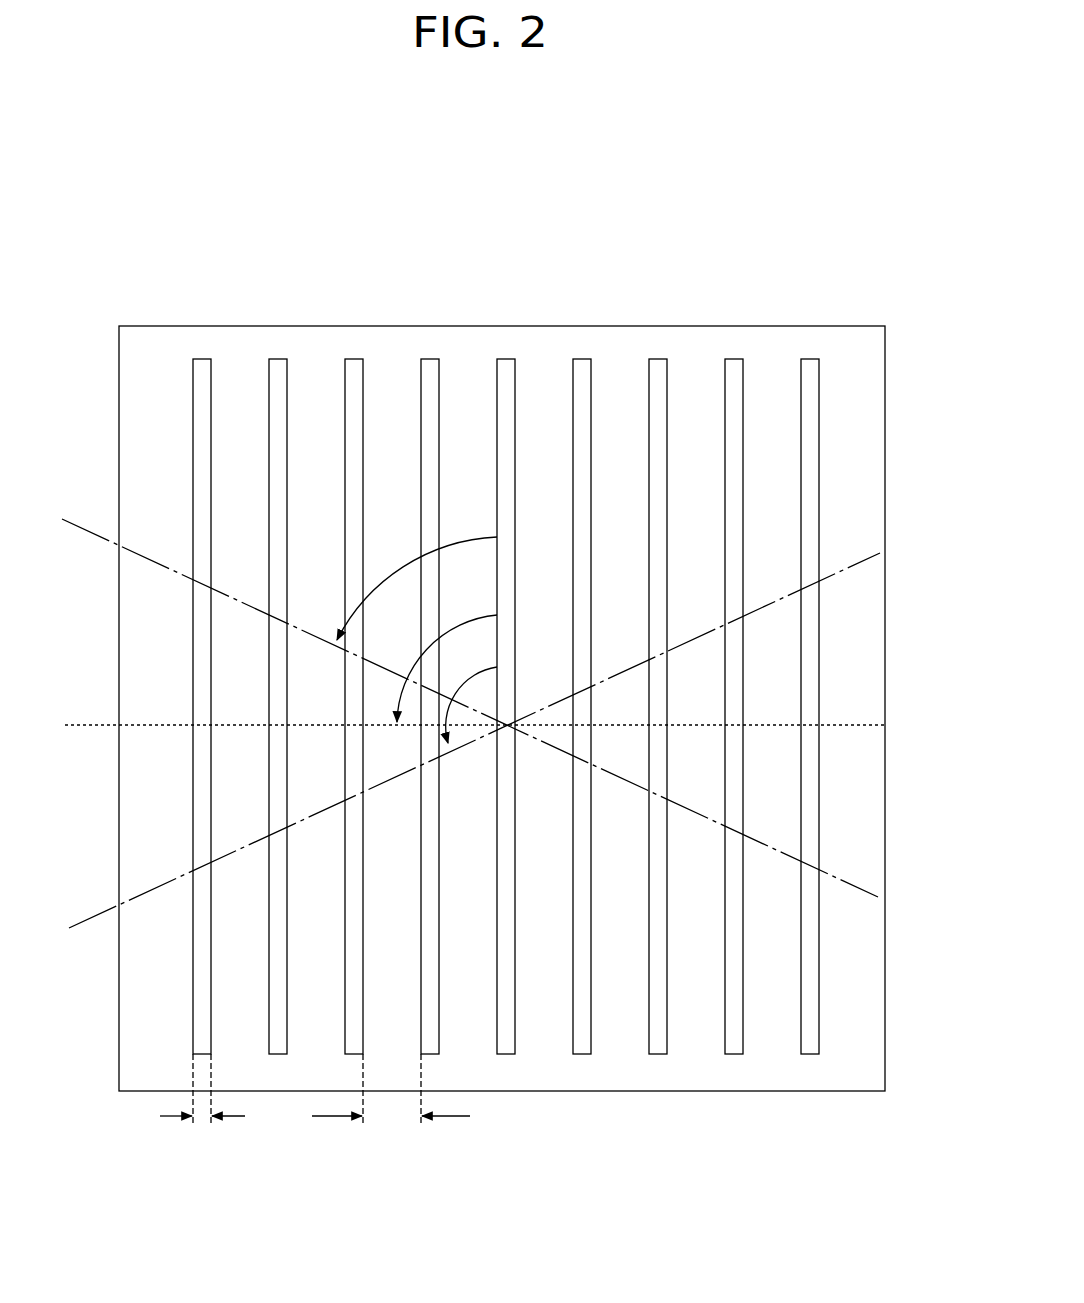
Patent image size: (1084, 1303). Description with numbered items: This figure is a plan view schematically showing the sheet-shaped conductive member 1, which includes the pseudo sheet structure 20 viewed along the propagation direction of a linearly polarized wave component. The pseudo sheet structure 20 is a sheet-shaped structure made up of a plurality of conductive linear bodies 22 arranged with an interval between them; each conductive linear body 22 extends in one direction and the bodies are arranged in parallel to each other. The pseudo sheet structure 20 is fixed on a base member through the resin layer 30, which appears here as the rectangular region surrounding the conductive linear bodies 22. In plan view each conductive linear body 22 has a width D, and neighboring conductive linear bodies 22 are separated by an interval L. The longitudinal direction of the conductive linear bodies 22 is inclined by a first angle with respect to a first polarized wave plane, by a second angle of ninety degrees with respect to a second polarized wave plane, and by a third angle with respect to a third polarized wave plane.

The sheet-shaped conductive member 1 is at (799, 124).
The pseudo sheet structure 20 is at (765, 265).
The conductive linear body 22 is at (287, 380).
The resin layer 30 is at (862, 433).